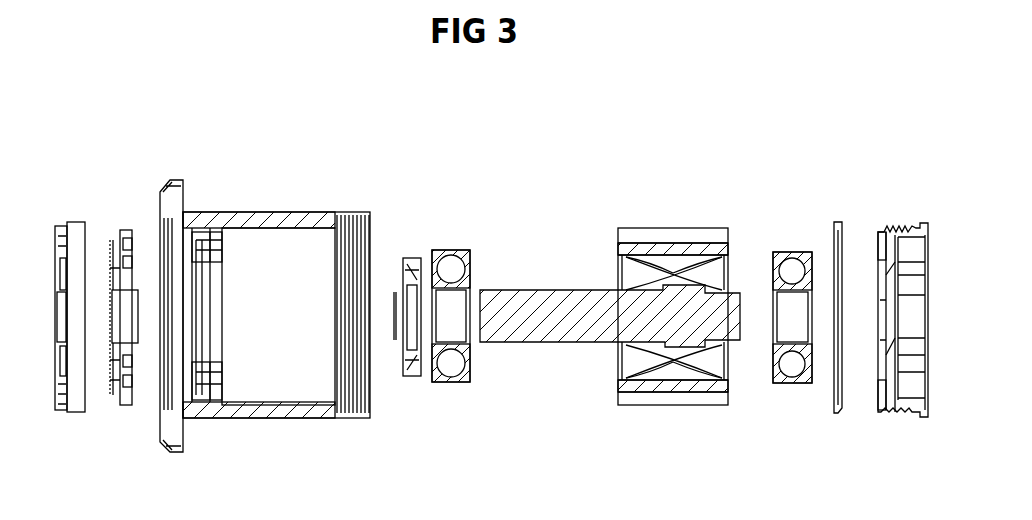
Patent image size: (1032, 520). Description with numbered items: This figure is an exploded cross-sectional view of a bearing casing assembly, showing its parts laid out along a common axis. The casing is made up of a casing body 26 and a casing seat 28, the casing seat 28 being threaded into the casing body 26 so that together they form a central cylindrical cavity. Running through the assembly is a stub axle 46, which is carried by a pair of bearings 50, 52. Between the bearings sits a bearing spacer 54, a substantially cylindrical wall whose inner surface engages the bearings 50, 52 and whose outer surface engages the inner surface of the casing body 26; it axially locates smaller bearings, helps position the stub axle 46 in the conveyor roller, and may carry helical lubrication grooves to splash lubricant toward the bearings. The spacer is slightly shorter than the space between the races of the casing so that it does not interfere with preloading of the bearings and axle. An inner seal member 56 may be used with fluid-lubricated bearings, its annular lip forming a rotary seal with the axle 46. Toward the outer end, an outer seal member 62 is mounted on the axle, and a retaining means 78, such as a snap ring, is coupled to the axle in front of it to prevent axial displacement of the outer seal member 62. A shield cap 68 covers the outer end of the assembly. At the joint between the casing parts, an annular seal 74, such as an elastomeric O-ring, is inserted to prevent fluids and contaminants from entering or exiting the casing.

The casing body 26 is at (275, 223).
The casing seat 28 is at (913, 230).
The stub axle 46 is at (558, 311).
The bearing 50 is at (455, 256).
The bearing 52 is at (793, 264).
The bearing spacer 54 is at (665, 249).
The inner seal member 56 is at (407, 259).
The outer seal member 62 is at (120, 231).
The shield cap 68 is at (66, 224).
The annular seal 74 is at (835, 222).
The retaining means 78 is at (394, 292).